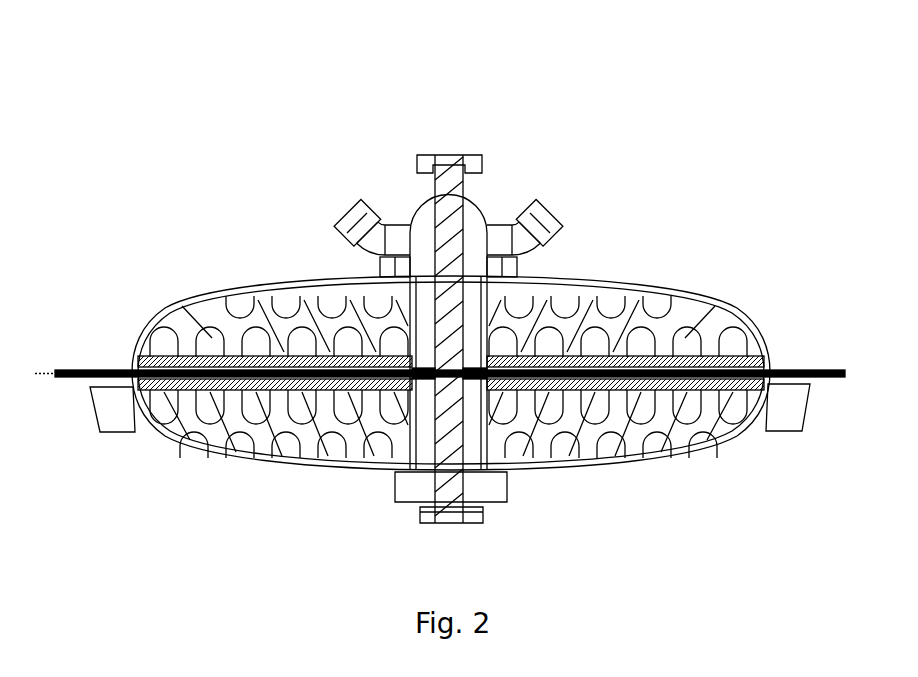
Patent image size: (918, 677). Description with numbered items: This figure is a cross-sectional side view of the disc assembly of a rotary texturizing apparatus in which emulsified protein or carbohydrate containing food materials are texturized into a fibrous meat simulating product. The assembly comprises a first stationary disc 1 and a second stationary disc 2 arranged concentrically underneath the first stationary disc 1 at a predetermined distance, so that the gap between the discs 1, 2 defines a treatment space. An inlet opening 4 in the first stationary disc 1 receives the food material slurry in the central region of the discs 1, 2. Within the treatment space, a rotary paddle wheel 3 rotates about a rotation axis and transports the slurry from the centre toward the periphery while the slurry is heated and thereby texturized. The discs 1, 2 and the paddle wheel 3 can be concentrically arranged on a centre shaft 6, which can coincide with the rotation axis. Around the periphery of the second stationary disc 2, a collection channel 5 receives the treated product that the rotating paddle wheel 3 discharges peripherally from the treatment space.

The first stationary disc 1 is at (192, 352).
The second stationary disc 2 is at (278, 460).
The rotary paddle wheel 3 is at (795, 360).
The inlet opening 4 is at (340, 203).
The collection channel 5 is at (795, 407).
The centre shaft 6 is at (453, 150).